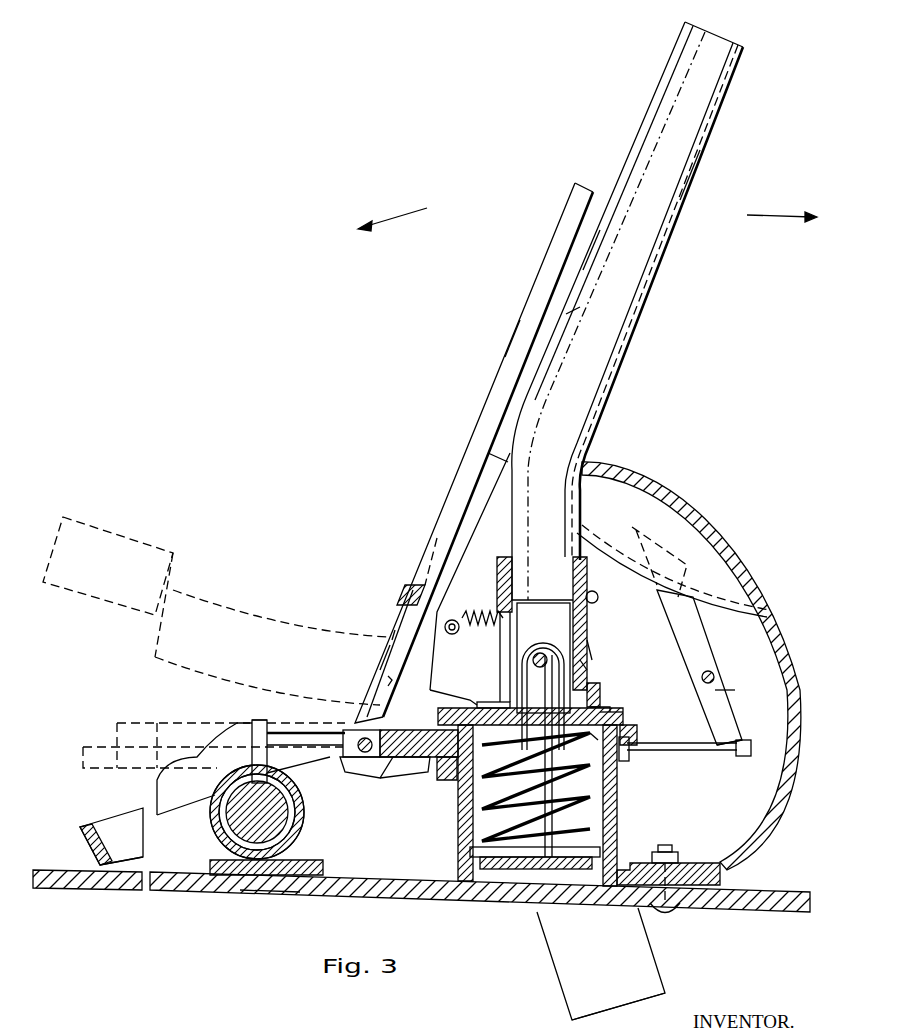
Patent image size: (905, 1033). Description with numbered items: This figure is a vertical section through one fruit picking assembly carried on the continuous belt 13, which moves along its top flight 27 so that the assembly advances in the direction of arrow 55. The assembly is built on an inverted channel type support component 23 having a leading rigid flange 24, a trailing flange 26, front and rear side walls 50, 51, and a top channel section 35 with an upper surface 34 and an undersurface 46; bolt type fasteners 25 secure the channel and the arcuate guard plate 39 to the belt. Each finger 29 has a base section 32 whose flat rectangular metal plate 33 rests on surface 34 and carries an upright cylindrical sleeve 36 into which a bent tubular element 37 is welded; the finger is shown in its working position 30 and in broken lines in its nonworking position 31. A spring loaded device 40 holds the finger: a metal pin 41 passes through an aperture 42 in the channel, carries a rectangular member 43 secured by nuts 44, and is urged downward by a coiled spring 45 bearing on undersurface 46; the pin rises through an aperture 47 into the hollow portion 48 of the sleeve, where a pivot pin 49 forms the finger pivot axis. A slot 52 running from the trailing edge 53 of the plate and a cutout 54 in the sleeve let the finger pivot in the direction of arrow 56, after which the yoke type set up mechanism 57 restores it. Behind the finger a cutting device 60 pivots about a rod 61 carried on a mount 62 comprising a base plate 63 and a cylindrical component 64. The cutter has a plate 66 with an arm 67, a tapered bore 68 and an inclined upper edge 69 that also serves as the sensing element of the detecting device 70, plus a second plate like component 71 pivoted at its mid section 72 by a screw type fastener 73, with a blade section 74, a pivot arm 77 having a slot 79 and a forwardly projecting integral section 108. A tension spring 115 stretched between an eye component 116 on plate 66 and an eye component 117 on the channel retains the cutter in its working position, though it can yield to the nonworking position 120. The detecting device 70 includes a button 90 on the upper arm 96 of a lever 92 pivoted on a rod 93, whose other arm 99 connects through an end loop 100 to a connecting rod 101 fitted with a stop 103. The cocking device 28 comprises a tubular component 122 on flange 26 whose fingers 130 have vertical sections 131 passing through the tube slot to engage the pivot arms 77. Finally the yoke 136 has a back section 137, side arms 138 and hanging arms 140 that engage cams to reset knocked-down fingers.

The continuous belt 13 is at (185, 893).
The inverted channel type support component 23 is at (612, 862).
The rigid flange 24 is at (722, 885).
The bolt type fasteners 25 is at (675, 915).
The flange 26 is at (306, 868).
The top flight 27 is at (255, 893).
The cocking device 28 is at (302, 822).
The fingers 29 is at (676, 45).
The working position 30 is at (720, 100).
The nonworking position 31 is at (270, 620).
The base section 32 is at (588, 668).
The flat rectangular metal plate 33 is at (480, 705).
The upper surface 34 is at (600, 712).
The top channel section 35 is at (605, 718).
The upright cylindrical sleeve component 36 is at (590, 650).
The elongated tubular element 37 is at (657, 268).
The arcuate guard plate 39 is at (790, 645).
The spring loaded device 40 is at (600, 795).
The metal pin 41 is at (513, 797).
The aperture 42 is at (512, 714).
The rectangular member 43 is at (595, 844).
The nuts 44 is at (497, 862).
The spring 45 is at (600, 765).
The undersurface 46 is at (612, 737).
The aperture 47 is at (585, 698).
The hollow portion 48 is at (590, 621).
The pivot pin 49 is at (553, 633).
The front side wall 50 is at (614, 842).
The rear side wall 51 is at (458, 850).
The slot 52 is at (500, 680).
The trailing edge 53 is at (429, 700).
The cutout 54 is at (505, 642).
The arrow 55 is at (784, 200).
The arrow 56 is at (427, 208).
The yoke type set up mechanism 57 is at (657, 955).
The cutting devices 60 is at (598, 228).
The rod 61 is at (345, 765).
The mounts 62 is at (430, 772).
The rectangular base plate 63 is at (440, 790).
The solid cylindrical component 64 is at (400, 732).
The flat rigid metal plate 66 is at (535, 410).
The arm 67 is at (383, 657).
The tapered bore 68 is at (350, 722).
The upper edge portion 69 is at (588, 263).
The detecting device 70 is at (725, 752).
The plate like component 71 is at (540, 272).
The mid section 72 is at (408, 603).
The screw type fastener 73 is at (437, 545).
The blade section 74 is at (504, 355).
The pivot arm 77 is at (392, 635).
The slot 79 is at (388, 680).
The button 90 is at (675, 550).
The lever 92 is at (730, 690).
The transversely extending rod 93 is at (712, 678).
The upper arm 96 is at (698, 625).
The other arm 99 is at (745, 740).
The end loop 100 is at (750, 755).
The connecting rod 101 is at (685, 746).
The stop 103 is at (627, 757).
The integral section 108 is at (392, 779).
The retainer springs 115 is at (496, 617).
The eye component 116 is at (450, 636).
The eye component 117 is at (593, 597).
The nonworking position 120 is at (188, 722).
The tubular component 122 is at (212, 833).
The fingers 130 is at (255, 724).
The vertical section 131 is at (255, 760).
The yoke 136 is at (82, 830).
The back section 137 is at (80, 850).
The side arms 138 is at (146, 856).
The arms 140 is at (635, 1000).